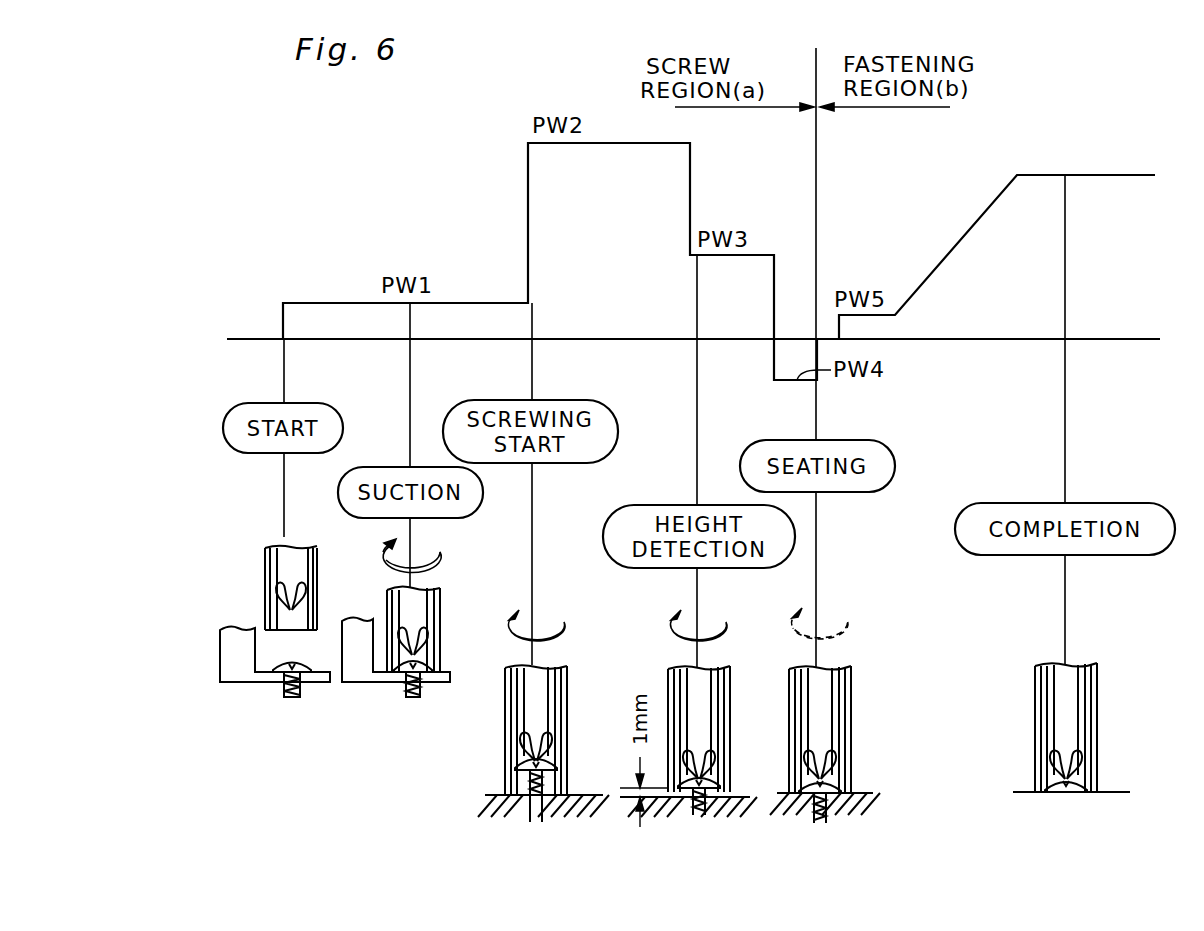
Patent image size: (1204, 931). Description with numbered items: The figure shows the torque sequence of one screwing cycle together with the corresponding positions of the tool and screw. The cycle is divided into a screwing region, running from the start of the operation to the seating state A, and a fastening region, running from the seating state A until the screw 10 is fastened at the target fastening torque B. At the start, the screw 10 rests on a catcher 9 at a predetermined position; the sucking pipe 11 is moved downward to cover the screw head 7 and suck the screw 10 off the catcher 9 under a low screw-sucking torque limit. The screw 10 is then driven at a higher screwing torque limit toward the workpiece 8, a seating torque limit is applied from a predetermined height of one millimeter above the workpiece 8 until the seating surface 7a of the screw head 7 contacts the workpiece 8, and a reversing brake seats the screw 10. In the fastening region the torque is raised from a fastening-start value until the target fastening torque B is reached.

The screw head 7 is at (297, 662).
The seating surface 7a is at (302, 678).
The workpiece 8 is at (494, 795).
The catcher 9 is at (228, 643).
The screw 10 is at (292, 700).
The sucking pipe 11 is at (436, 600).
The seating state A is at (855, 720).
The target fastening torque B is at (1146, 178).